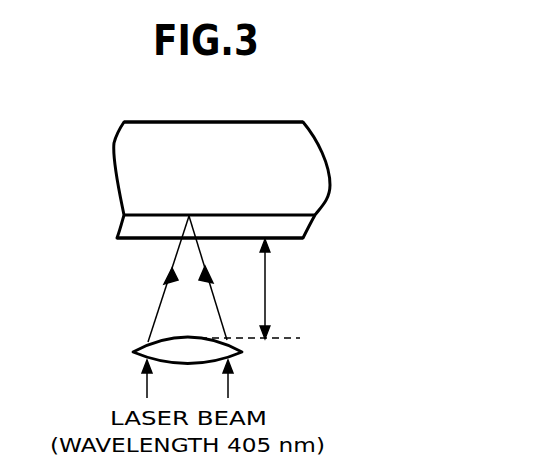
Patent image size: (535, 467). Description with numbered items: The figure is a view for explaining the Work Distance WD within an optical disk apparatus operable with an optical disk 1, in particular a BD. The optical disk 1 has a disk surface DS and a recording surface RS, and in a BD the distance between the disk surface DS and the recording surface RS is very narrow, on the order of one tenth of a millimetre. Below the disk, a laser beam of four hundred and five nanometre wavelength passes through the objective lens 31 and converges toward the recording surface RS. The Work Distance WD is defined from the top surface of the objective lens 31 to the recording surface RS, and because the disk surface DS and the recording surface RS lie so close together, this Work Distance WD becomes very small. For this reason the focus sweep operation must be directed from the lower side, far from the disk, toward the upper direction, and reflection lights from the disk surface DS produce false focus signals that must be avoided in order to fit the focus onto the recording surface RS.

The optical disk 1 is at (245, 136).
The Blu Disc BD is at (211, 103).
The recording surface RS is at (252, 215).
The disk surface DS is at (145, 239).
The Work Distance WD is at (250, 289).
The objective lens 31 is at (232, 357).